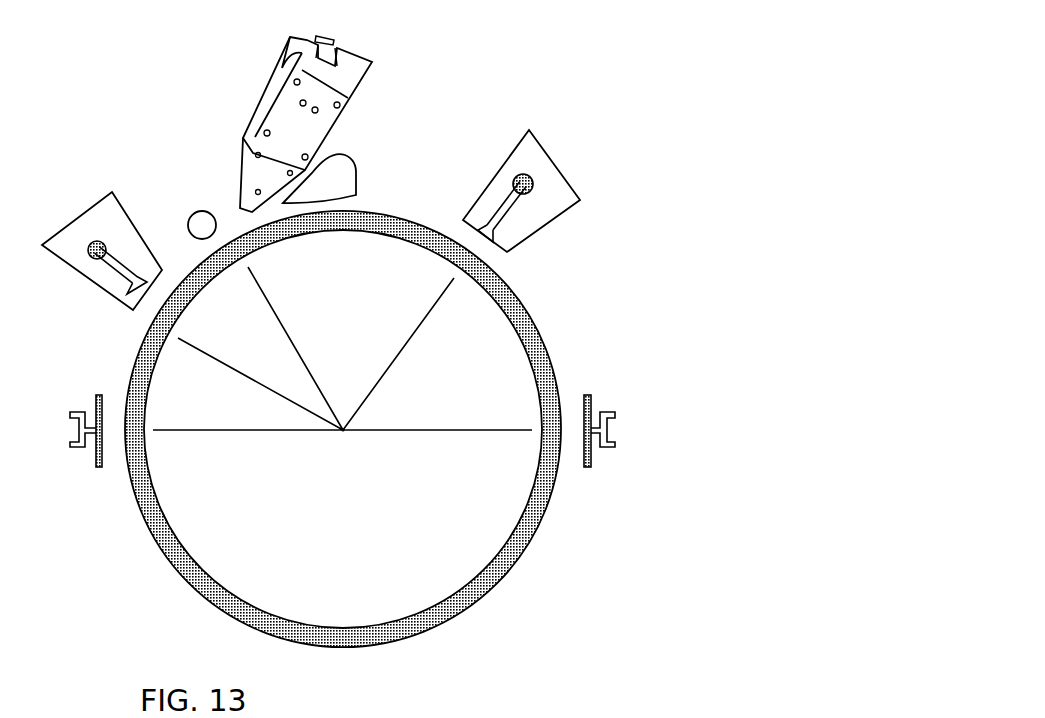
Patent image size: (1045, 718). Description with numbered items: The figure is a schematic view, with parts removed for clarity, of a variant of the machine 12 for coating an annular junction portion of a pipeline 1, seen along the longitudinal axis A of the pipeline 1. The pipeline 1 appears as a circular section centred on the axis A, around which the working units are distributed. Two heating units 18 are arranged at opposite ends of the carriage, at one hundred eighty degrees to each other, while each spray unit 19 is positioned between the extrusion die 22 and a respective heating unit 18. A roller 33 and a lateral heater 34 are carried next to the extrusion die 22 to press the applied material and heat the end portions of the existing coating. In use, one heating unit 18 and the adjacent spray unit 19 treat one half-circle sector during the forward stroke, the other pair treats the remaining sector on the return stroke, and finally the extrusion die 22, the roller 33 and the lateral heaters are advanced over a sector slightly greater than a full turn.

The pipeline 1 is at (112, 559).
The machine 12 is at (616, 90).
The heating unit 18 is at (77, 430).
The spray unit 19 is at (95, 220).
The extrusion die 22 is at (345, 72).
The roller 33 is at (202, 214).
The lateral heater 34 is at (350, 177).
The longitudinal axis A is at (343, 430).